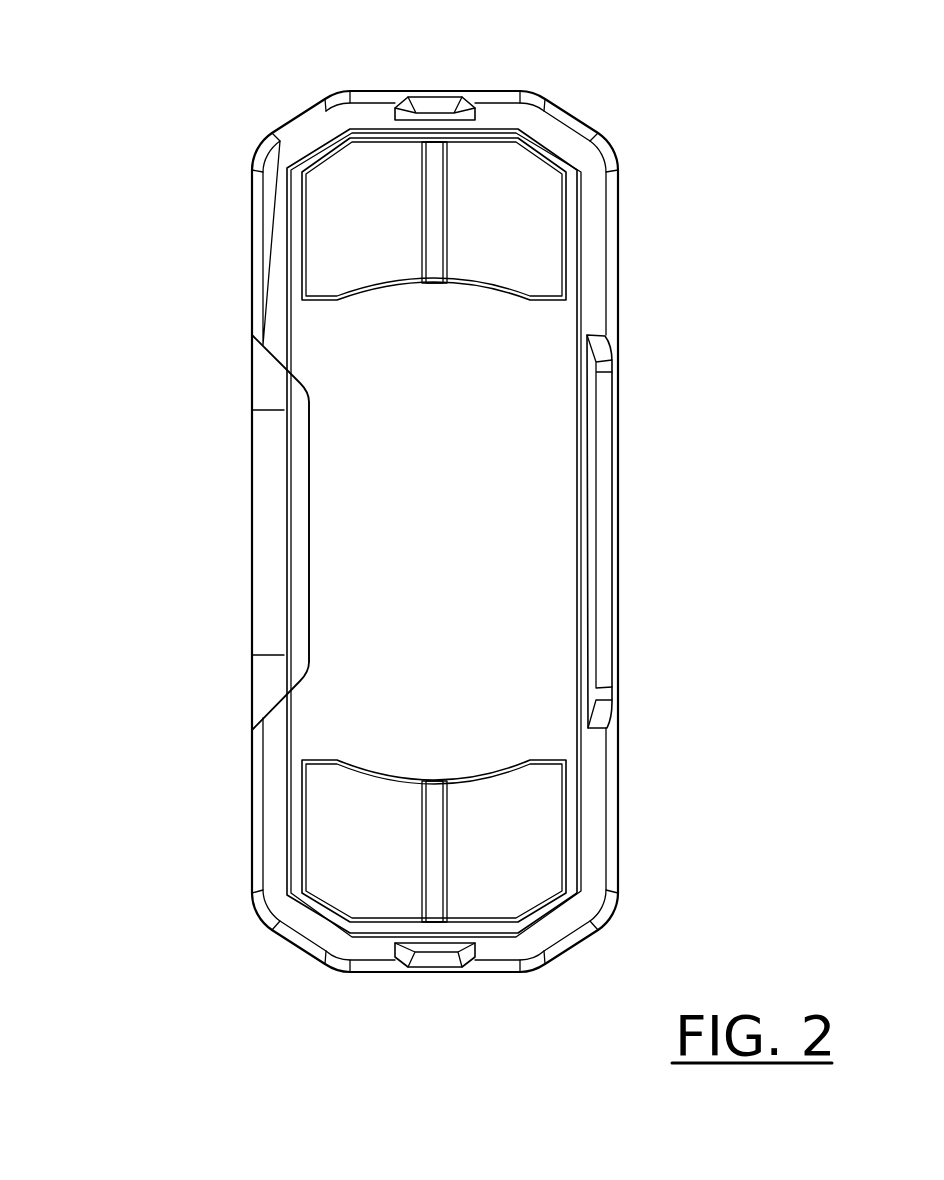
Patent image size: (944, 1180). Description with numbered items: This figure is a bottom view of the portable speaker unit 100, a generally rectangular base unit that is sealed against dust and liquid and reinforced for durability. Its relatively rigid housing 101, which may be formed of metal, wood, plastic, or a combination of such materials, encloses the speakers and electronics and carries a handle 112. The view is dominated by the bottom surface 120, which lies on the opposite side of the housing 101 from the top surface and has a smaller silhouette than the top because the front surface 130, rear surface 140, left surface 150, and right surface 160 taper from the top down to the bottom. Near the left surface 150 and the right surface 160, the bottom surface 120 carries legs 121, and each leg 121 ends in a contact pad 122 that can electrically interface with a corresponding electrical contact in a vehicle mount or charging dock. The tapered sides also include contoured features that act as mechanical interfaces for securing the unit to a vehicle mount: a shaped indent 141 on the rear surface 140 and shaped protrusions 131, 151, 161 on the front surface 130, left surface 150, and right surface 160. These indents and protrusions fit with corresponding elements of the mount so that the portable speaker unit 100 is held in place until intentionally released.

The portable speaker unit 100 is at (622, 777).
The housing 101 is at (337, 708).
The handle 112 is at (262, 628).
The bottom surface 120 is at (322, 357).
The legs 121 is at (430, 250).
The contact pad 122 is at (322, 218).
The front surface 130 is at (618, 338).
The protrusion 131 is at (610, 570).
The rear surface 140 is at (252, 808).
The indent 141 is at (307, 537).
The left surface 150 is at (385, 88).
The protrusion 151 is at (442, 107).
The right surface 160 is at (383, 975).
The protrusion 161 is at (448, 967).